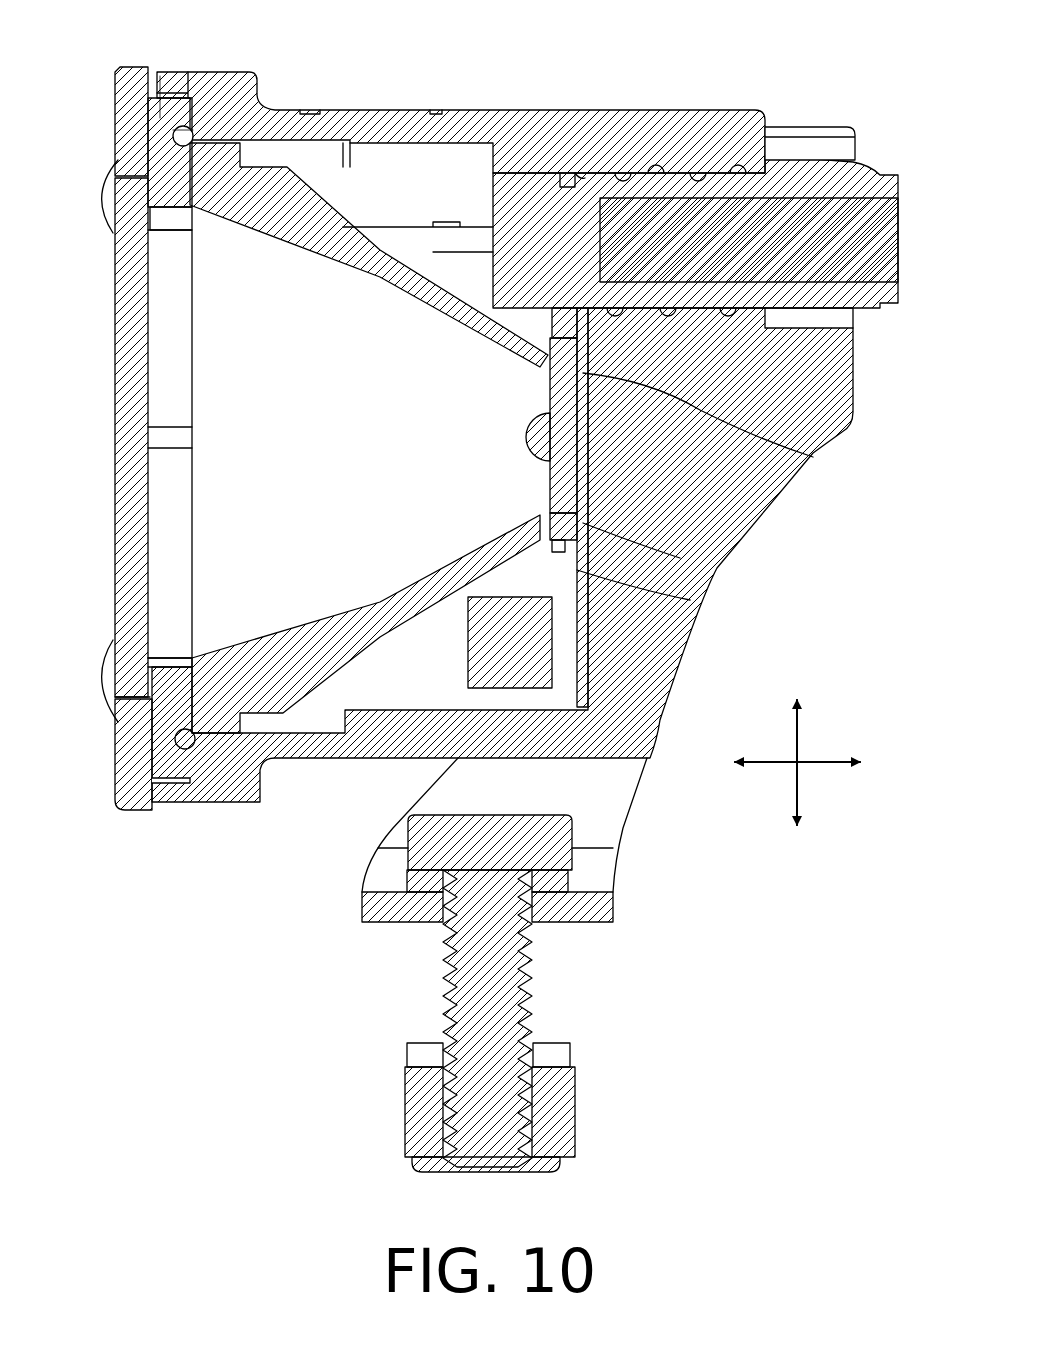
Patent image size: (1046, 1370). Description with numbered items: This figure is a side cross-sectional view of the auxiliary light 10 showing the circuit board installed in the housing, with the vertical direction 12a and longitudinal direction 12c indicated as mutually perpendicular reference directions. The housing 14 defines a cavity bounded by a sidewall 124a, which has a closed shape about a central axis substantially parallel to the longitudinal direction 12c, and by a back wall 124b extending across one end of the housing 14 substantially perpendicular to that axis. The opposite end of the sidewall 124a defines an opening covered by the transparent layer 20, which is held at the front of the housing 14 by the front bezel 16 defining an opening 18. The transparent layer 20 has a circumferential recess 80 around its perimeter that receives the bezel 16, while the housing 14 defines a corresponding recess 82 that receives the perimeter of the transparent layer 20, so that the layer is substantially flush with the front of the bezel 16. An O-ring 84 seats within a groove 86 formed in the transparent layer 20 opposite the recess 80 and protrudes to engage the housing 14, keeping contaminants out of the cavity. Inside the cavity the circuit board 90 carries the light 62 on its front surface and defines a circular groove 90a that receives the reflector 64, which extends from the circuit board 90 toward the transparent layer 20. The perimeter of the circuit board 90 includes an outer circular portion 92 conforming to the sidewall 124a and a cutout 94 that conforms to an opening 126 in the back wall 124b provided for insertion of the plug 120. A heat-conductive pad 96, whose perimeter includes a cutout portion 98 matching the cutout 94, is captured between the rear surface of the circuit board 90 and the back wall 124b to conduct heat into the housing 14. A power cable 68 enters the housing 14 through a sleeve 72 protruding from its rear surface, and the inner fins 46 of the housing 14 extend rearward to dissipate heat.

The auxiliary light 10 is at (604, 60).
The vertical direction 12a is at (797, 780).
The longitudinal direction 12c is at (770, 760).
The housing 14 is at (263, 110).
The front bezel 16 is at (130, 728).
The opening 18 is at (130, 697).
The transparent layer 20 is at (133, 510).
The inner fins 46 is at (740, 490).
The light 62 is at (515, 420).
The reflector 64 is at (450, 568).
The power cable 68 is at (870, 225).
The sleeve 72 is at (800, 175).
The circumferential recess 80 is at (190, 205).
The recess 82 is at (182, 140).
The O-ring 84 is at (190, 133).
The groove 86 is at (177, 150).
The circuit board 90 is at (560, 492).
The circular groove 90a is at (555, 545).
The outer circular portion 92 is at (568, 700).
The cutout 94 is at (492, 305).
The heat-conductive pad 96 is at (807, 462).
The cutout portion 98 is at (585, 285).
The plug 120 is at (555, 195).
The sidewall 124a is at (405, 698).
The back wall 124b is at (690, 600).
The opening 126 is at (630, 170).